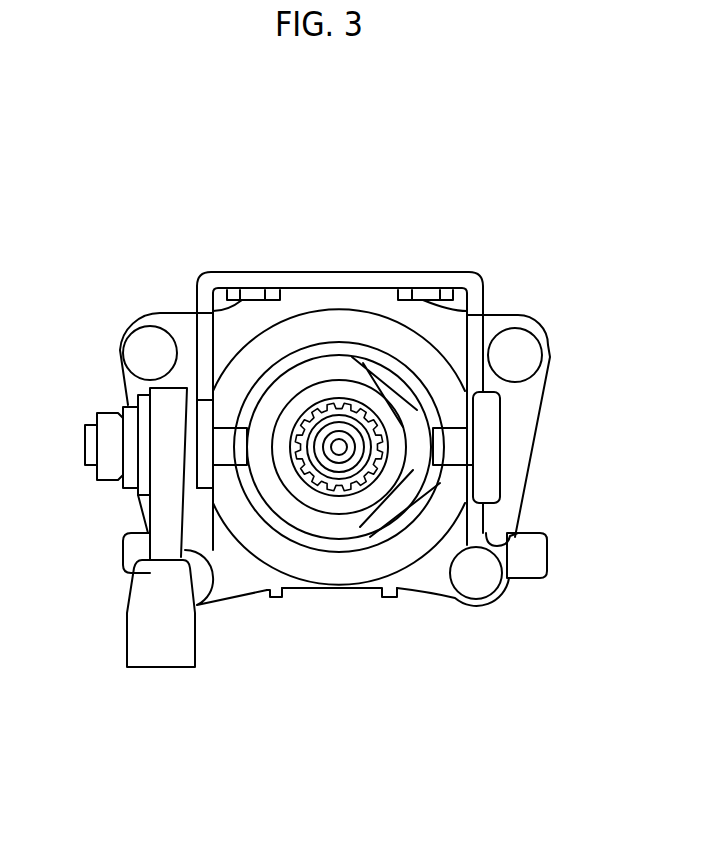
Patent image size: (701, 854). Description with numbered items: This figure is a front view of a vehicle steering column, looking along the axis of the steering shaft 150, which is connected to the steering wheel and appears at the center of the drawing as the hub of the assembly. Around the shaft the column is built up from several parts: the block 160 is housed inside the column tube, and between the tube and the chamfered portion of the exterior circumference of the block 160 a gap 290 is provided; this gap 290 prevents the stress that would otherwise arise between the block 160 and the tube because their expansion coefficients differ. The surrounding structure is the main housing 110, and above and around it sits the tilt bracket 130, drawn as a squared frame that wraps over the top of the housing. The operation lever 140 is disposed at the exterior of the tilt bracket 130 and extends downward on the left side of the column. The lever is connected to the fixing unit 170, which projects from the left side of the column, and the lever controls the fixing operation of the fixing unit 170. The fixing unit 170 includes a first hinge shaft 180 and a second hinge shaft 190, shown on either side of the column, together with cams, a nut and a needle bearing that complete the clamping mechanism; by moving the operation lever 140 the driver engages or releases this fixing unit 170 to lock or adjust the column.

The main housing 110 is at (528, 394).
The tilt bracket 130 is at (422, 276).
The operation lever 140 is at (161, 657).
The steering shaft 150 is at (350, 480).
The block 160 is at (313, 520).
The fixing unit 170 is at (96, 394).
The first hinge shaft 180 is at (490, 443).
The second hinge shaft 190 is at (225, 437).
The gap 290 is at (395, 510).